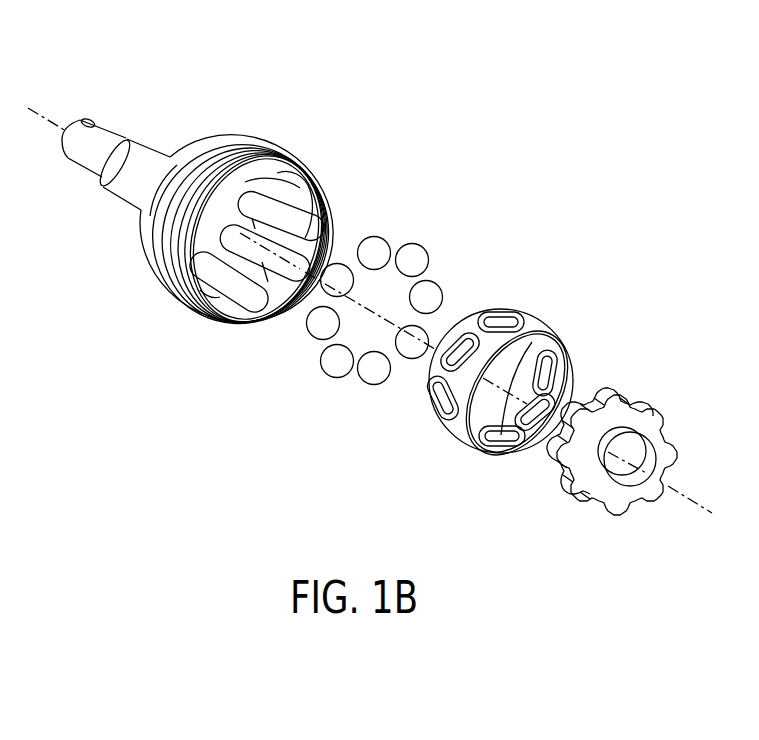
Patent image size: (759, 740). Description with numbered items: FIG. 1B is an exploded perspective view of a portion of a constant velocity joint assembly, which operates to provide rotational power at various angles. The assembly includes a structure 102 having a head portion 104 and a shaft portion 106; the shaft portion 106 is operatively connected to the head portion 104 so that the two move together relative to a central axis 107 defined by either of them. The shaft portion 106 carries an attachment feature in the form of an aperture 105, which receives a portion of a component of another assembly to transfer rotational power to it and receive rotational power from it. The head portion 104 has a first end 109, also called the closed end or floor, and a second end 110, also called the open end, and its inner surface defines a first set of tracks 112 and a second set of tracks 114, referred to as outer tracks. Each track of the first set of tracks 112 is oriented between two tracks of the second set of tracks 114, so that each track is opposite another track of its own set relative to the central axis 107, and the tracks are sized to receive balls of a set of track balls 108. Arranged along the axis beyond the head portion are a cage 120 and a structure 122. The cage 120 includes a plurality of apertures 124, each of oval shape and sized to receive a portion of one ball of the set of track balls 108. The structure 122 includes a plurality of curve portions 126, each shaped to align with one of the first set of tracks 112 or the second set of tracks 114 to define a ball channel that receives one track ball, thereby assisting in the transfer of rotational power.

The structure 102 is at (152, 306).
The head portion 104 is at (250, 141).
The aperture 105 is at (88, 120).
The shaft portion 106 is at (108, 135).
The central axis 107 is at (53, 103).
The set of track balls 108 is at (409, 222).
The first end 109 is at (135, 220).
The second end 110 is at (213, 326).
The first set of tracks 112 is at (286, 172).
The second set of tracks 114 is at (303, 223).
The cage 120 is at (539, 308).
The structure 122 is at (649, 389).
The plurality of apertures 124 is at (461, 334).
The plurality of curve portions 126 is at (577, 476).